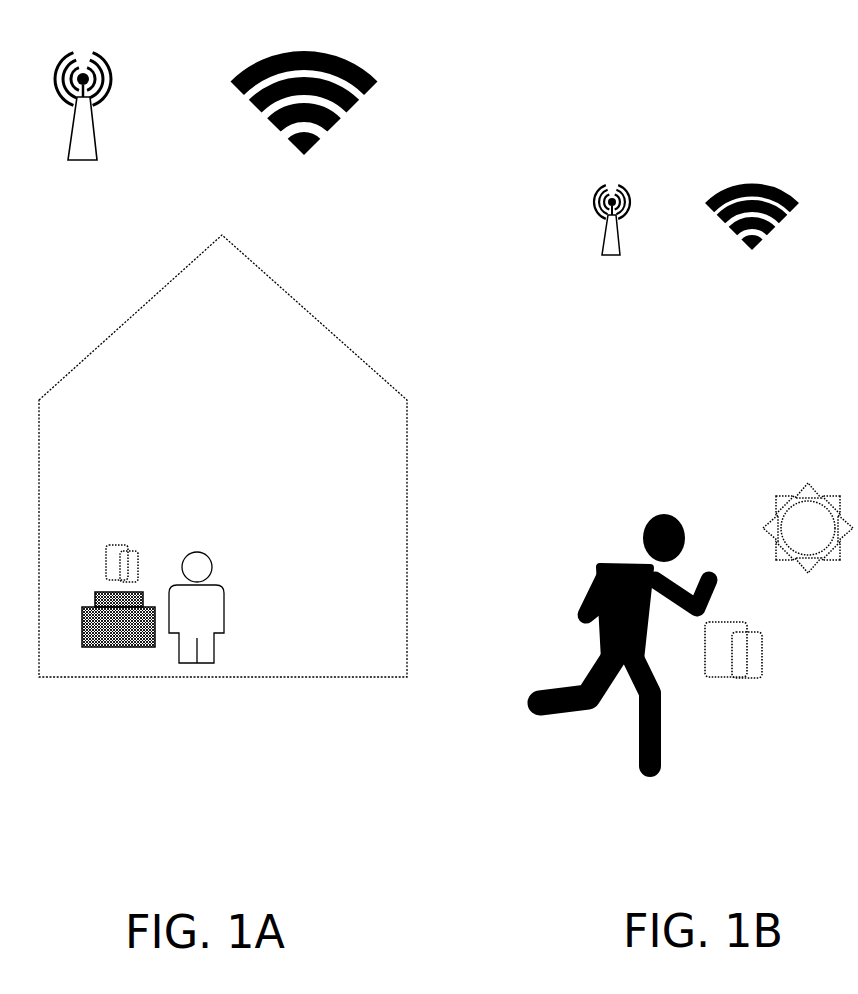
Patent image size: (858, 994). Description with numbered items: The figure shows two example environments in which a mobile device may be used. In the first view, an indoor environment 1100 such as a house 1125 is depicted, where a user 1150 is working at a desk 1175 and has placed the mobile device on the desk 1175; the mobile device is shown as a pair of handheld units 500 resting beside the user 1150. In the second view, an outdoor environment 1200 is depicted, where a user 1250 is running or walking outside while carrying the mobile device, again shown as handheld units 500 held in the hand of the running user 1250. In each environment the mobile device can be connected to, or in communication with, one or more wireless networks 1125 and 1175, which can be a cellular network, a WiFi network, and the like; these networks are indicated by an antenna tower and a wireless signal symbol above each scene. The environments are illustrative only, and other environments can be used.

In FIG. 1A, the indoor environment 1100 is at (318, 264).
In FIG. 1A, the house 1125 is at (505, 335).
In FIG. 1B, the house 1125 is at (612, 239).
In FIG. 1A, the desk 1175 is at (82, 607).
In FIG. 1B, the desk 1175 is at (752, 240).
In FIG. 1A, the mobile electronic devices 500 is at (122, 540).
In FIG. 1B, the mobile electronic devices 500 is at (762, 645).
In FIG. 1A, the user 1150 is at (223, 613).
In FIG. 1B, the outdoor environment 1200 is at (690, 477).
In FIG. 1B, the user 1250 is at (662, 752).